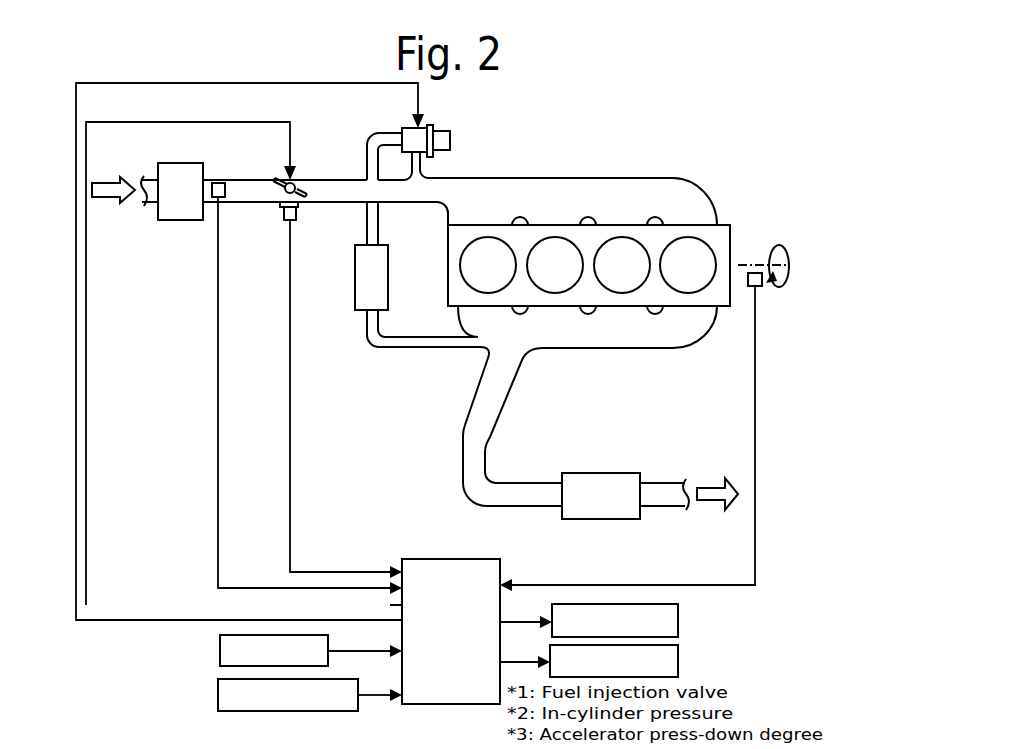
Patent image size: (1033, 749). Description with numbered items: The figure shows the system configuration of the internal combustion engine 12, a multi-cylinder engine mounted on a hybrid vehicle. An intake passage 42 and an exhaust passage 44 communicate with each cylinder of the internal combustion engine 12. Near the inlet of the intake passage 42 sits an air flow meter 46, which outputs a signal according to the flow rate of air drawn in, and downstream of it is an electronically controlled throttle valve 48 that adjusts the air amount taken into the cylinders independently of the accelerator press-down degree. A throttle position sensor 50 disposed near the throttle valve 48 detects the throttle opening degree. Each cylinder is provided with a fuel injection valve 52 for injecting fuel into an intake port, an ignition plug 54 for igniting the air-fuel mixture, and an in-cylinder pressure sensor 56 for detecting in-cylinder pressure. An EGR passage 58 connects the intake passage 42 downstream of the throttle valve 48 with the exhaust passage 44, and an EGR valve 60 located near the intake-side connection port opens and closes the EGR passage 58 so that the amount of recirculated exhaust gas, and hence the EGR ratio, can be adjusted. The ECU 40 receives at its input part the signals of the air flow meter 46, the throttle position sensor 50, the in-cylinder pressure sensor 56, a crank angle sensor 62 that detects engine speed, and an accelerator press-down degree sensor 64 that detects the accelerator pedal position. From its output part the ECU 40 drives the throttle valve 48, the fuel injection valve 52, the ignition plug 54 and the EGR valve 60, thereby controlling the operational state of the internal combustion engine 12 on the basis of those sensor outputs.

The internal combustion engine 12 is at (647, 144).
The ECU 40 is at (442, 558).
The intake passage 42 is at (316, 178).
The exhaust passage 44 is at (500, 393).
The air flow meter 46 is at (217, 183).
The throttle valve 48 is at (273, 182).
The throttle position sensor 50 is at (291, 222).
The fuel injection valve 52 is at (680, 620).
The ignition plug 54 is at (680, 661).
The in-cylinder pressure sensor 56 is at (219, 650).
The EGR passage 58 is at (403, 345).
The EGR valve 60 is at (441, 131).
The crank angle sensor 62 is at (756, 287).
The accelerator press-down degree sensor 64 is at (218, 694).